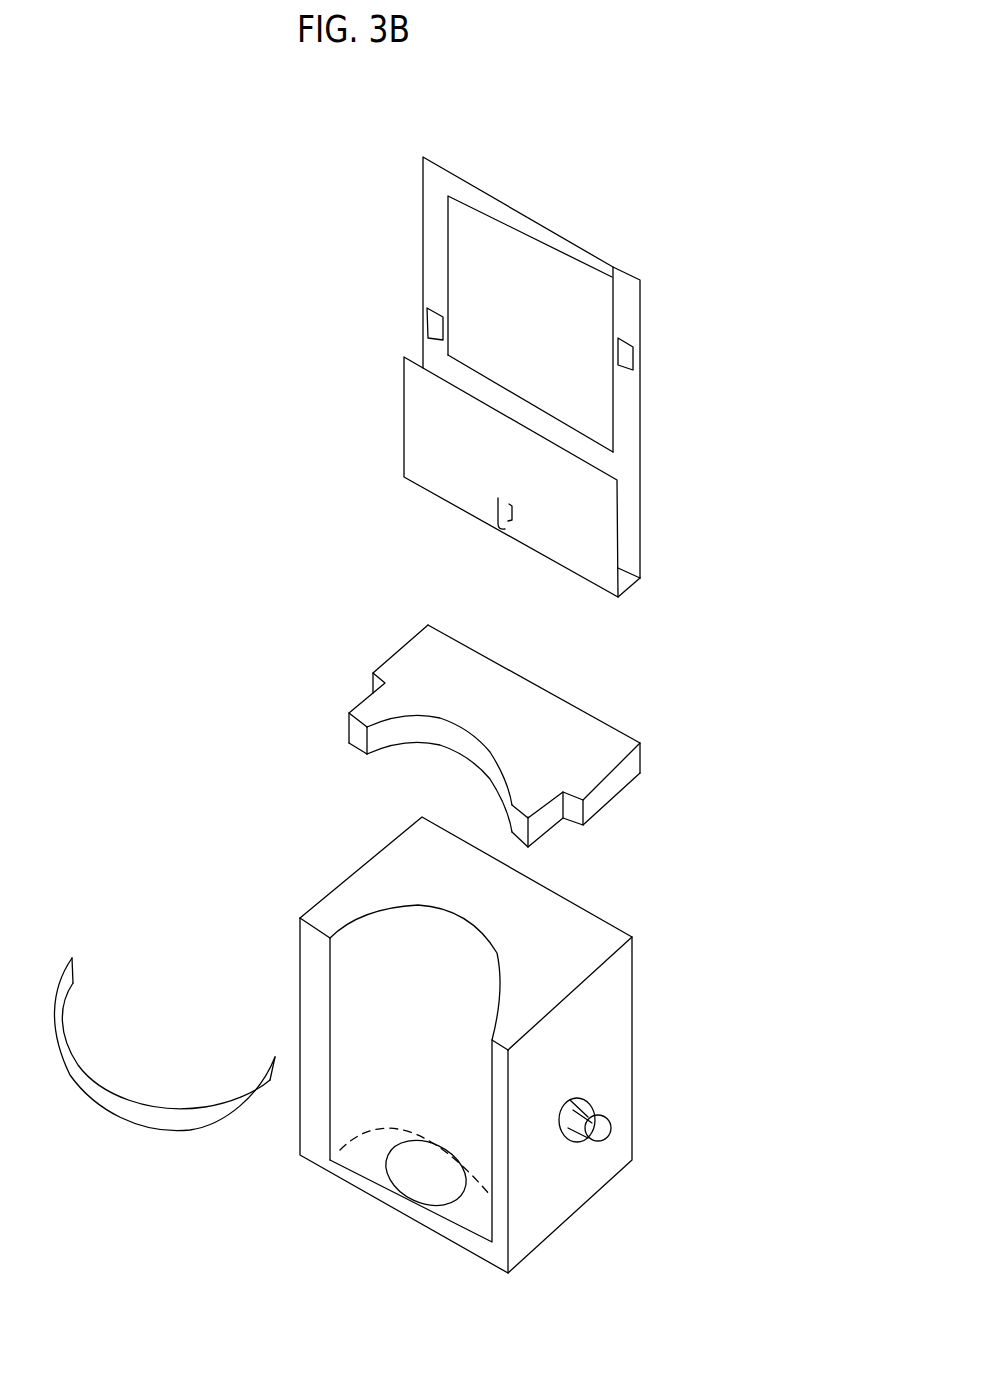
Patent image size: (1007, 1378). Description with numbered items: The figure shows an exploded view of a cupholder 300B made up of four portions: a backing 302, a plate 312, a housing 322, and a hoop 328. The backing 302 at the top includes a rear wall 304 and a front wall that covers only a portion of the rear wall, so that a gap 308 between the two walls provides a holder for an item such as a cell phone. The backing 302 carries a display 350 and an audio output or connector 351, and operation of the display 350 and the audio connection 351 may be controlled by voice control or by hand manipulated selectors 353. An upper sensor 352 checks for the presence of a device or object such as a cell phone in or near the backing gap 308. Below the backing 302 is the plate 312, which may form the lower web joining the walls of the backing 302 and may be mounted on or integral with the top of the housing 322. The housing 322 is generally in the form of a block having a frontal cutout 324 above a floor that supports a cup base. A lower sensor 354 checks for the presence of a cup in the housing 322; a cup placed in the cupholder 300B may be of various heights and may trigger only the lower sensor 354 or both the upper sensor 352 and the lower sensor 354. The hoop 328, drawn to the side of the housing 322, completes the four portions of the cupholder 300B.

The cupholder 300B is at (642, 197).
The backing 302 is at (685, 415).
The rear wall 304 is at (435, 180).
The display 350 is at (587, 293).
The hand manipulated selector 353 is at (423, 327).
The audio output or connector 351 is at (638, 353).
The gap 308 is at (623, 540).
The upper sensor 352 is at (497, 522).
The plate 312 is at (660, 733).
The housing 322 is at (655, 963).
The frontal cutout 324 is at (348, 1098).
The lower sensor 354 is at (423, 1175).
The hoop 328 is at (95, 1060).